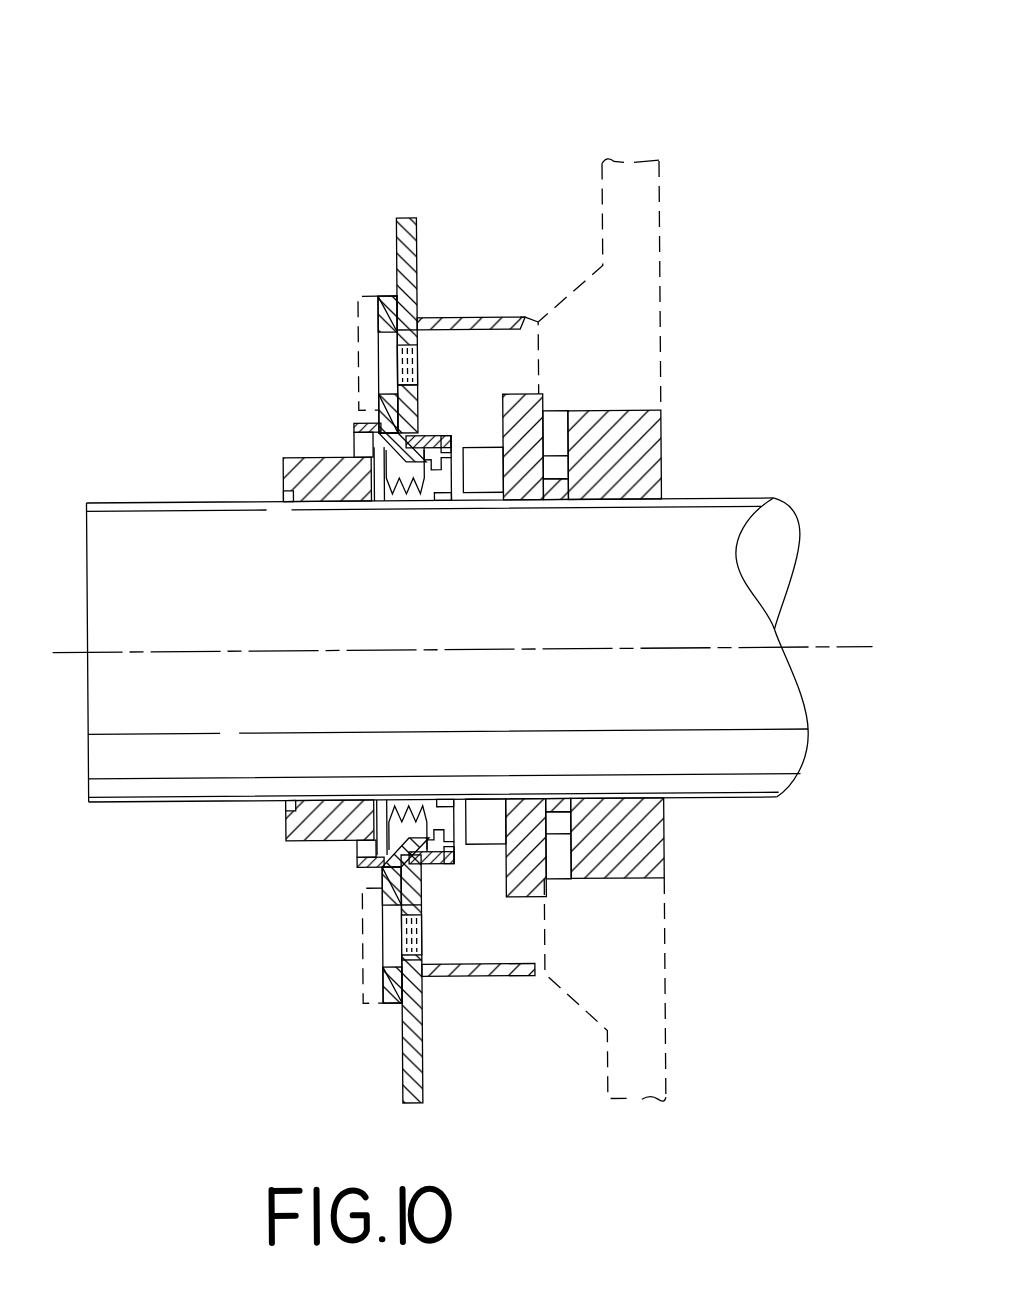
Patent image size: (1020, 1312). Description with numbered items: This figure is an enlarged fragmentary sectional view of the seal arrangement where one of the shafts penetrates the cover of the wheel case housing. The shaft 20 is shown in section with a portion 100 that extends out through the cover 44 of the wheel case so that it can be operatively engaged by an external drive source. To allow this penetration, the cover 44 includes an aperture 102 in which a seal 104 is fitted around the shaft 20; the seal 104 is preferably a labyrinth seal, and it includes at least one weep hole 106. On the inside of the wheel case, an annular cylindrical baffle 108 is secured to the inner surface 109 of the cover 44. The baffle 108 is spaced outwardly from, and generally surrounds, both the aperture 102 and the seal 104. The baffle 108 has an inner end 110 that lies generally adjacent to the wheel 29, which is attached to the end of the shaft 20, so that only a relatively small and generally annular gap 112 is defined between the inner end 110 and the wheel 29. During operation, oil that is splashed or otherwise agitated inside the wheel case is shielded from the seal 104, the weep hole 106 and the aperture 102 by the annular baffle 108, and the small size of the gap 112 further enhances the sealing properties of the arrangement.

The shaft 20 is at (693, 547).
The wheel 29 is at (660, 268).
The cover 44 is at (397, 250).
The portion 100 is at (203, 539).
The aperture 102 is at (370, 873).
The seal 104 is at (412, 470).
The weep hole 106 is at (375, 980).
The annular cylindrical baffle 108 is at (483, 316).
The inner surface 109 is at (418, 1028).
The inner end 110 is at (522, 318).
The gap 112 is at (535, 322).